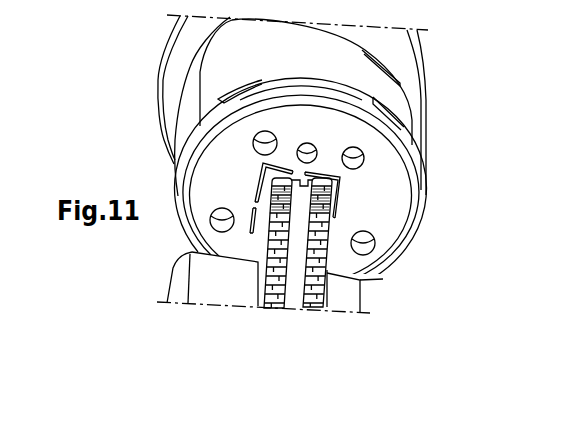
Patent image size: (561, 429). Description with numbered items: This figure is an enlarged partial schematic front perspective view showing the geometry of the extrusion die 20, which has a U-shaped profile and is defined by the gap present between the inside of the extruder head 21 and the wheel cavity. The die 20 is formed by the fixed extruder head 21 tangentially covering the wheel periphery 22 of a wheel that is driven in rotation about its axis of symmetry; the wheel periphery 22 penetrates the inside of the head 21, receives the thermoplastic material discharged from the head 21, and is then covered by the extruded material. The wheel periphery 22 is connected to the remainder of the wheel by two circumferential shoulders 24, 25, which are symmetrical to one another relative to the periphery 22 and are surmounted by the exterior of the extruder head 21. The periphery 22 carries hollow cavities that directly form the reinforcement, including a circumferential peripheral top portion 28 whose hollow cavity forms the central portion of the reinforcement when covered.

The extrusion die 20 is at (254, 270).
The extruder head 21 is at (322, 60).
The wheel periphery 22 is at (362, 280).
The circumferential shoulder 24 is at (225, 288).
The circumferential shoulder 25 is at (324, 277).
The circumferential peripheral top portion 28 is at (300, 210).